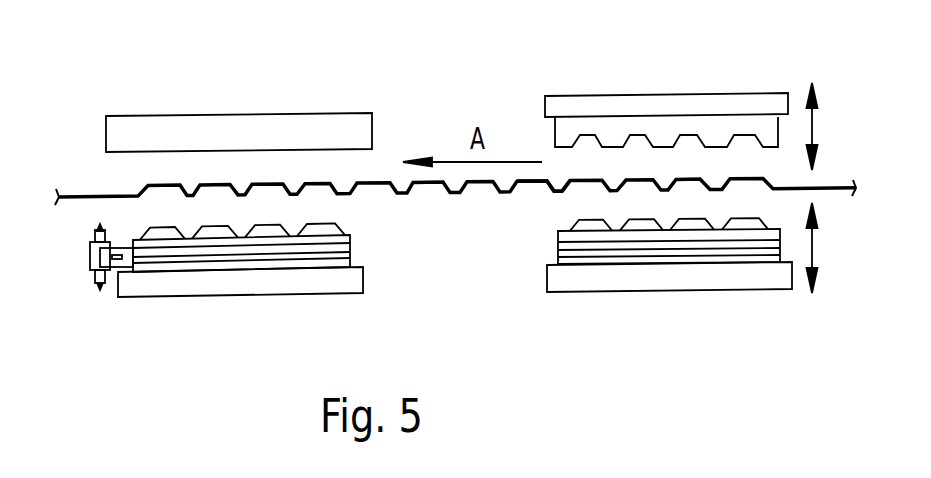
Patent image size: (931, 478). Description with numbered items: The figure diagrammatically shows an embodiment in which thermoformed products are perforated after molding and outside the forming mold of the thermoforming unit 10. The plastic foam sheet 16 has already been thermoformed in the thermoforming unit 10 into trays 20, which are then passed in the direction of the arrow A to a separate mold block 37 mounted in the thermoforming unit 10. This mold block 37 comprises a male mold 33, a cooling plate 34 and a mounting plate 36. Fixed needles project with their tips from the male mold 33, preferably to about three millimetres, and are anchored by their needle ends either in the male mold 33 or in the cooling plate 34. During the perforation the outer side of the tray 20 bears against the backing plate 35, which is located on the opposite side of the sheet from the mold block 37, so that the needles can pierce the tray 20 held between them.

The thermoforming unit 10 is at (702, 74).
The plastic foam sheet 16 is at (836, 187).
The tray 20 is at (547, 188).
The male mold 33 is at (133, 245).
The cooling plate 34 is at (359, 243).
The backing plate 35 is at (236, 116).
The mounting plate 36 is at (147, 282).
The mold block 37 is at (419, 225).